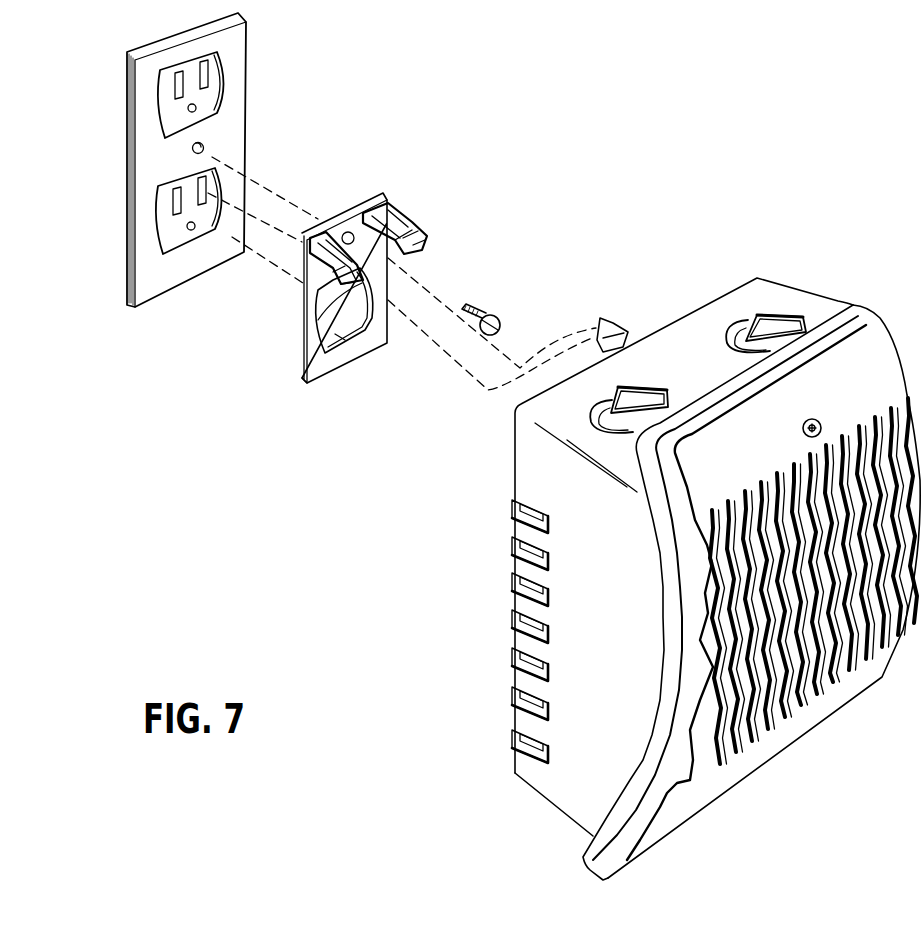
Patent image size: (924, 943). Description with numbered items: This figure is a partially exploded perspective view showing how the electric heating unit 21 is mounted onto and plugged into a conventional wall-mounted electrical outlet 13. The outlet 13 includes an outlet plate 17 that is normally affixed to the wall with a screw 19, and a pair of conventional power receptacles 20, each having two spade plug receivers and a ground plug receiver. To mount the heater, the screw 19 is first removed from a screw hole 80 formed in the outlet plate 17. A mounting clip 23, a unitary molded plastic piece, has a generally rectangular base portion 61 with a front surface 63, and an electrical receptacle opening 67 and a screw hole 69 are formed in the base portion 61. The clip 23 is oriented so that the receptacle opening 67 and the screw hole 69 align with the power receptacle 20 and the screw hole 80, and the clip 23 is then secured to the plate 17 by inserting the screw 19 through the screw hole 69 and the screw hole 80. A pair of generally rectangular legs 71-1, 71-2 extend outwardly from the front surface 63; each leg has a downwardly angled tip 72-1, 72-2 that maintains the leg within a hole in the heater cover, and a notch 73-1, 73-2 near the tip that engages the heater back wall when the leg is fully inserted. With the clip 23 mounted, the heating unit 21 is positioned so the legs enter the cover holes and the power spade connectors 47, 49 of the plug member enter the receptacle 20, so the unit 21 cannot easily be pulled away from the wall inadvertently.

The wall-mounted electrical outlet 13 is at (195, 160).
The outlet plate 17 is at (145, 162).
The power receptacle 20 is at (163, 238).
The screw hole 80 is at (206, 146).
The mounting clip 23 is at (369, 284).
The base portion 61 is at (344, 288).
The front surface 63 is at (360, 284).
The electrical receptacle opening 67 is at (339, 338).
The screw hole 69 is at (347, 231).
The leg 71-1 is at (390, 222).
The notch 73-1 is at (413, 234).
The downwardly angled tip 72-1 is at (424, 249).
The leg 71-2 is at (302, 275).
The notch 73-2 is at (340, 277).
The downwardly angled tip 72-2 is at (318, 318).
The screw 19 is at (500, 318).
The heating unit 21 is at (684, 579).
The power spade connector 47 is at (615, 322).
The power spade connector 49 is at (600, 338).